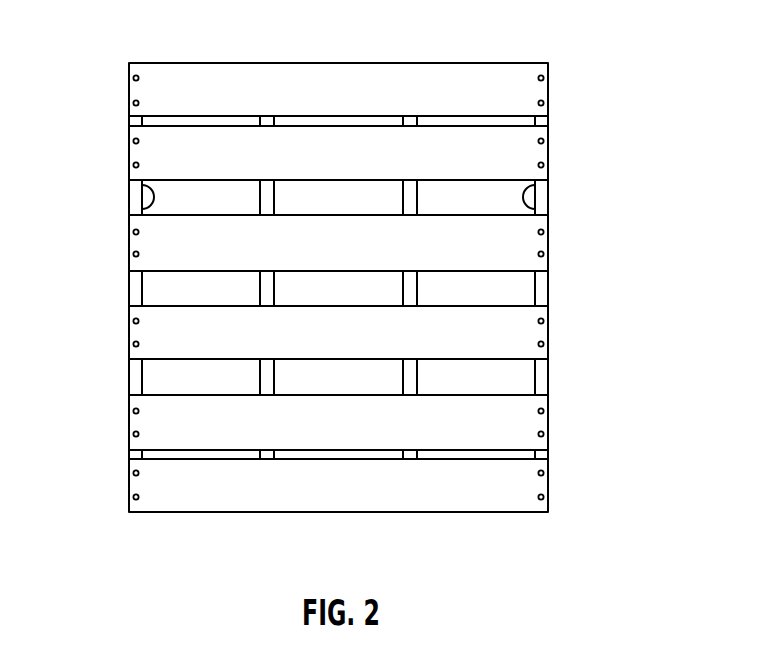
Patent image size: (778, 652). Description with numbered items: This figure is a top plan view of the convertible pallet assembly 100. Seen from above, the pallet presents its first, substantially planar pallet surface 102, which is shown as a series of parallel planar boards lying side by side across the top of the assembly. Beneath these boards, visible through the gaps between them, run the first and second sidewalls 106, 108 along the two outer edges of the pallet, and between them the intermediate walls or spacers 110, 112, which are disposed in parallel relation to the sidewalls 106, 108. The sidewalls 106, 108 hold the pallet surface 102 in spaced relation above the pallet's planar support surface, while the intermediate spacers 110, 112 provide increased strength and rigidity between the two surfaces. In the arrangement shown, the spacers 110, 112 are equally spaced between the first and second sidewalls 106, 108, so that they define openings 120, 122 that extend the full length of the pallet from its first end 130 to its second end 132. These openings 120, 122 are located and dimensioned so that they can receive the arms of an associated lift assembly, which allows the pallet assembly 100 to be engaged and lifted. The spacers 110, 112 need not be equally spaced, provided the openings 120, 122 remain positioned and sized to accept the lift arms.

The convertible pallet assembly 100 is at (381, 298).
The first pallet surface 102 is at (381, 290).
The first sidewall 106 is at (550, 287).
The second sidewall 108 is at (128, 288).
The intermediate wall spacer 110 is at (410, 383).
The intermediate wall spacer 112 is at (267, 384).
The opening 120 is at (537, 204).
The opening 122 is at (142, 205).
The first end 130 is at (502, 63).
The second end 132 is at (502, 513).